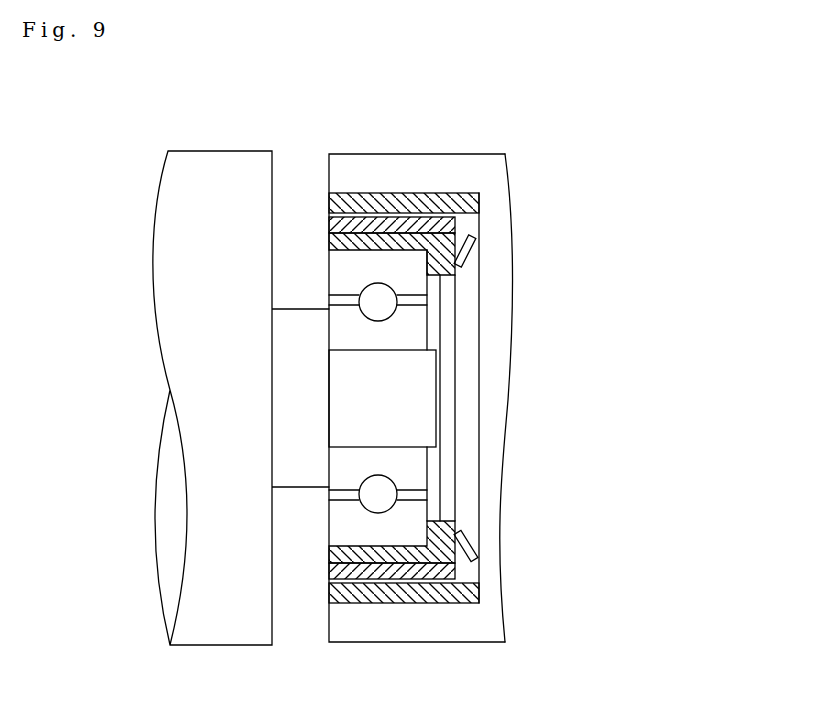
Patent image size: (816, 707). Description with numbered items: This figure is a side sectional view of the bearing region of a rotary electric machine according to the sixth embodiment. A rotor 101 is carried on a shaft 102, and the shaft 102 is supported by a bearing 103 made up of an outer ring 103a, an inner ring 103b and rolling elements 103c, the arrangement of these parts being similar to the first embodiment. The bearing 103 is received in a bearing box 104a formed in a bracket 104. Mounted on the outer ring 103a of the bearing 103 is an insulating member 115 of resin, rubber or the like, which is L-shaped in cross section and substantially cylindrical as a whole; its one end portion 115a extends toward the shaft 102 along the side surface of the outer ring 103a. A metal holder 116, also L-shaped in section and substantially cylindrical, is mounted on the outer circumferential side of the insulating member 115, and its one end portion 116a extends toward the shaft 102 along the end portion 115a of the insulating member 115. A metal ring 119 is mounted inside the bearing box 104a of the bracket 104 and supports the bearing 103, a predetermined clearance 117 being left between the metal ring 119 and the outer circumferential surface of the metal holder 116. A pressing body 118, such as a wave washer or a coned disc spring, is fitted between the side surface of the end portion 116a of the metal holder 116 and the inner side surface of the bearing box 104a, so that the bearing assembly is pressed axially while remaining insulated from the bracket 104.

The rotor 101 is at (200, 151).
The shaft 102 is at (393, 398).
The bearing 103 is at (329, 535).
The outer ring 103a is at (347, 523).
The inner ring 103b is at (342, 462).
The rolling elements 103c is at (373, 490).
The bracket 104 is at (420, 154).
The bearing box 104a is at (453, 192).
The insulating member 115 is at (378, 557).
The one end portion of the insulating member 115a is at (449, 522).
The metal holder 116 is at (393, 570).
The one end portion of the metal holder 116a is at (457, 538).
The clearance 117 is at (329, 218).
The pressing body 118 is at (477, 255).
The metal ring 119 is at (383, 202).